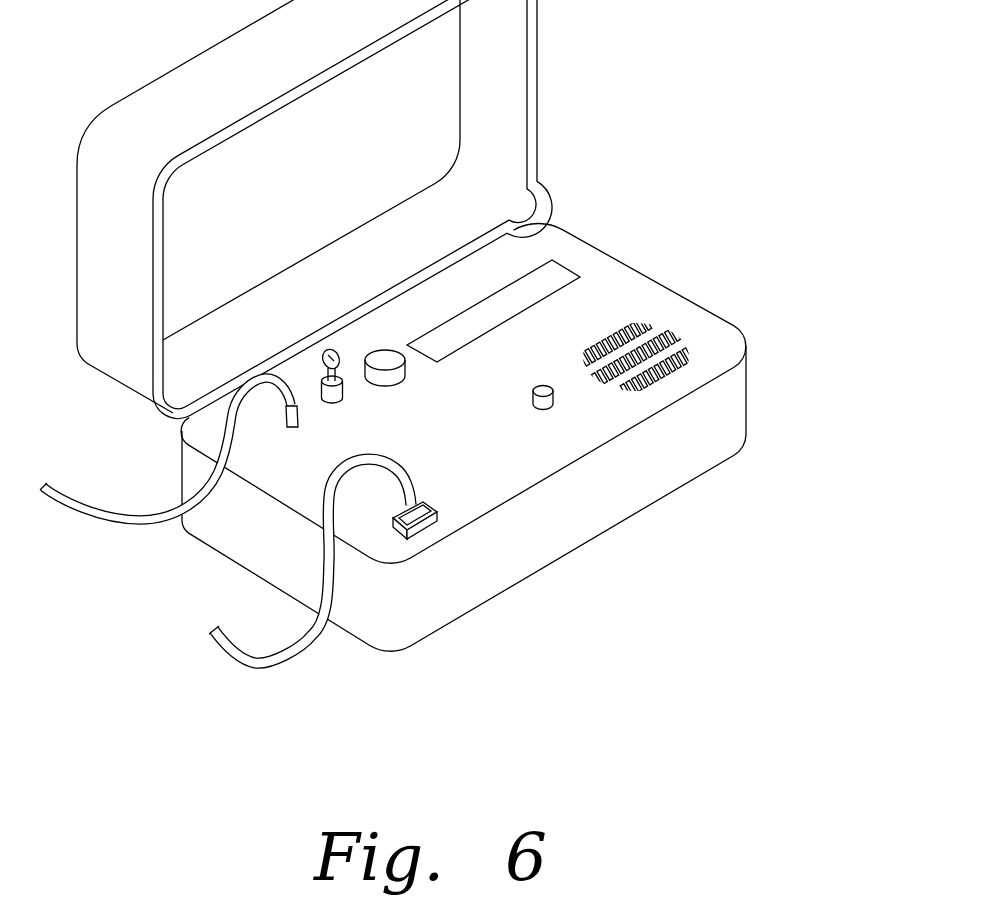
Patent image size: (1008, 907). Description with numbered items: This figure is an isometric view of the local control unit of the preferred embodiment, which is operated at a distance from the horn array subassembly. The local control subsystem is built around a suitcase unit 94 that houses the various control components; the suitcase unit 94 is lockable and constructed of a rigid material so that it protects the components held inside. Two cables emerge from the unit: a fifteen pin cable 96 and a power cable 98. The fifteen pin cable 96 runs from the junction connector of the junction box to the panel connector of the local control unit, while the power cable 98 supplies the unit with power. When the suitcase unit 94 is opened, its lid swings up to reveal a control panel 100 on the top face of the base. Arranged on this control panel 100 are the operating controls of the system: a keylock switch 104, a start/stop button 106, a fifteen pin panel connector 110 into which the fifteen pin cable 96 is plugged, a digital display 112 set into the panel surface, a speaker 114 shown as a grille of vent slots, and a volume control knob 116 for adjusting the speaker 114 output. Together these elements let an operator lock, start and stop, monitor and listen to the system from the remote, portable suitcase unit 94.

The suitcase unit 94 is at (658, 460).
The 15 pin cable 96 is at (307, 647).
The power cable 98 is at (130, 517).
The control panel 100 is at (607, 300).
The keylock switch 104 is at (318, 352).
The start/stop button 106 is at (387, 362).
The 15 pin panel connector 110 is at (440, 526).
The digital display 112 is at (486, 312).
The speaker 114 is at (683, 345).
The volume control knob 116 is at (545, 398).